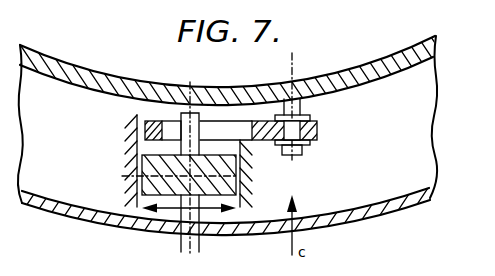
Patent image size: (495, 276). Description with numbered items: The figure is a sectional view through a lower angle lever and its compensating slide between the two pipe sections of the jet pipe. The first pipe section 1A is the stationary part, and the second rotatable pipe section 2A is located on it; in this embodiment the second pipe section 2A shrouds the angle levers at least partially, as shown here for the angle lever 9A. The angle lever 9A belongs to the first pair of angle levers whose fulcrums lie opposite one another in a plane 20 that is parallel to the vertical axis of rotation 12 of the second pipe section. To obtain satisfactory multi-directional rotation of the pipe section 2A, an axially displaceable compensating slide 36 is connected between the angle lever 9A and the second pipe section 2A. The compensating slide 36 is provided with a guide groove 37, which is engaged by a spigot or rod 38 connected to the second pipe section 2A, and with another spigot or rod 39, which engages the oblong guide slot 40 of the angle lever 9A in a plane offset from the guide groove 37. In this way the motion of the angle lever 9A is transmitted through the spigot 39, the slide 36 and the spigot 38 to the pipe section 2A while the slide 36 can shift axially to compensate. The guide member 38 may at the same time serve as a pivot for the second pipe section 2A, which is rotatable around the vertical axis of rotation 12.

The upper shell 1A is at (374, 81).
The second rotatable pipe section 2A is at (413, 206).
The plane 20 is at (298, 64).
The angle lever 9A is at (237, 122).
The oblong guide slot 40 is at (212, 127).
The spigot or rod 39 is at (176, 119).
The compensating slide 36 is at (141, 182).
The guide groove 37 is at (236, 190).
The spigot or rod 38 is at (197, 216).
The vertical axis of rotation 12 is at (186, 243).